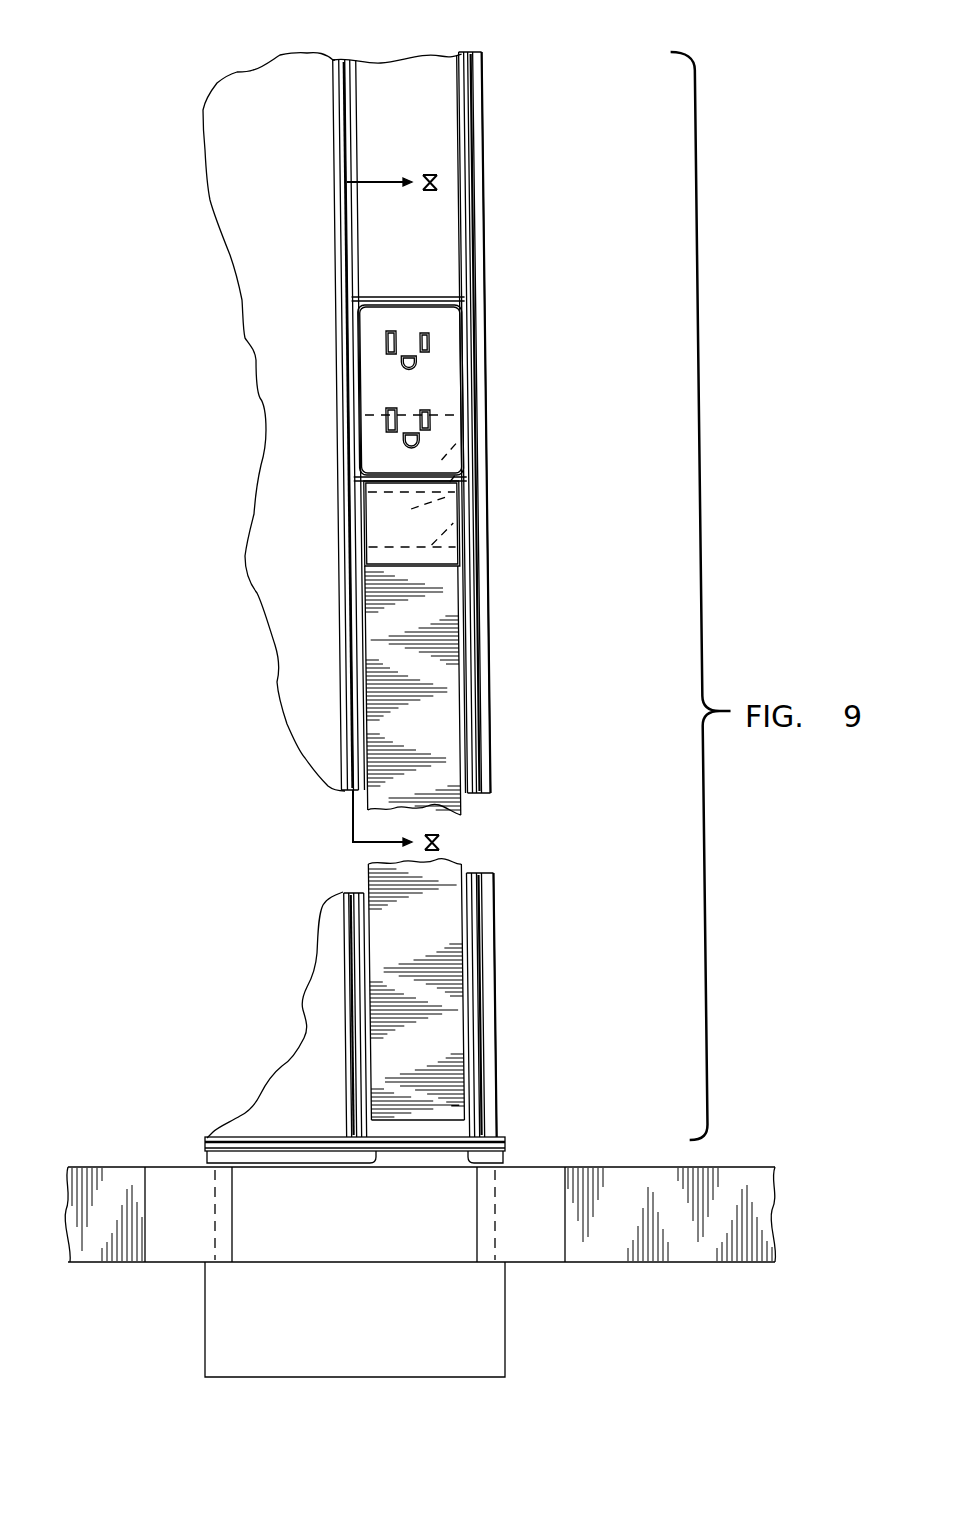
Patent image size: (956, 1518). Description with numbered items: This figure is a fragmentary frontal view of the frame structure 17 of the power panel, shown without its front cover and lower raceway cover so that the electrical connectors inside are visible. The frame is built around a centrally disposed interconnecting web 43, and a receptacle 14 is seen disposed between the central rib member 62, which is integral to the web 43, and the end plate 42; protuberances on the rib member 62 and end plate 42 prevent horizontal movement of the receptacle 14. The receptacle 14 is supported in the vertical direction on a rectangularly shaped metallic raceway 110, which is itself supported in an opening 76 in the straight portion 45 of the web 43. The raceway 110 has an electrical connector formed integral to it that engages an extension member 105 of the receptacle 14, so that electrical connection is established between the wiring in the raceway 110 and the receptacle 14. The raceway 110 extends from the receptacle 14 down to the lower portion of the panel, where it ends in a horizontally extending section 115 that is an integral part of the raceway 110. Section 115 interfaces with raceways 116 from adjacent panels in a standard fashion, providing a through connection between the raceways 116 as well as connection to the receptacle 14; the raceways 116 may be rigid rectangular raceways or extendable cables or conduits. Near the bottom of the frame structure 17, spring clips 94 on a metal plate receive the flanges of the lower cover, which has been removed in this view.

The frame structure 17 is at (237, 66).
The interconnecting web 43 is at (215, 108).
The rib member 62 is at (350, 598).
The straight portion 45 is at (402, 423).
The end plate 42 is at (477, 594).
The electrical receptacle 14 is at (390, 326).
The extension member 105 is at (405, 500).
The opening 76 is at (463, 497).
The raceway 110 is at (424, 738).
The spring clips 94 is at (500, 1143).
The horizontally extending section 115 is at (378, 1237).
The raceways 116 is at (120, 1193).